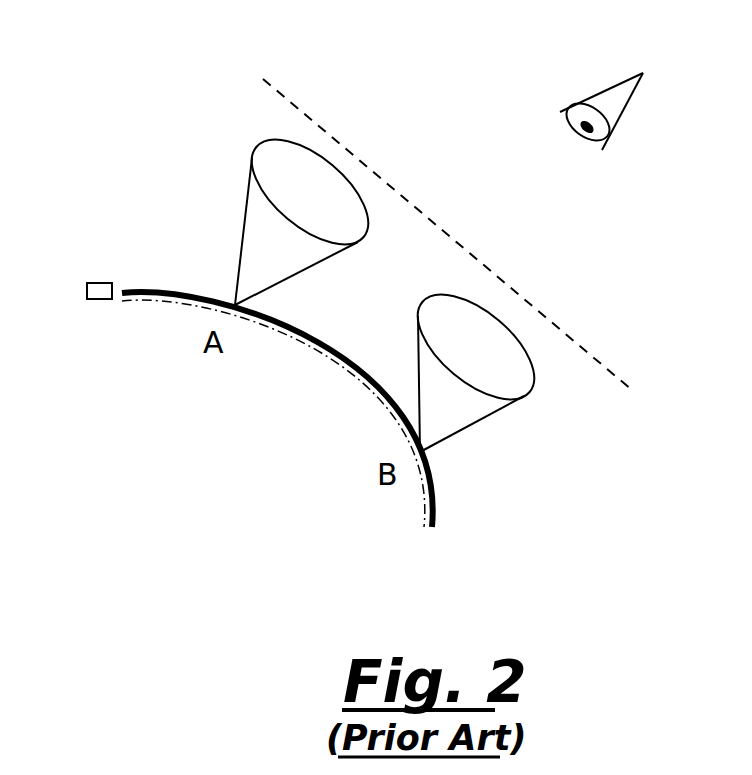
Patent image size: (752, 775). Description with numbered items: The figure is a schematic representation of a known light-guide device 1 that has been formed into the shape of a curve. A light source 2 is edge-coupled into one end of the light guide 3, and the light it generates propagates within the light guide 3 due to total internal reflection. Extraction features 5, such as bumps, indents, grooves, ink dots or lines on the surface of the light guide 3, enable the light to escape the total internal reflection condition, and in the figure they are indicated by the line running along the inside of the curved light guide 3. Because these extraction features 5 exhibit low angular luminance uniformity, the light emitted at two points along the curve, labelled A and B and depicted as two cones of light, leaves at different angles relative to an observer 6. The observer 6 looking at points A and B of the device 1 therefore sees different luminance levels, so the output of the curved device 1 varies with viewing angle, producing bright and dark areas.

The light-guide device 1 is at (143, 212).
The light source 2 is at (100, 283).
The light guide 3 is at (434, 502).
The extraction features 5 is at (275, 333).
The observer 6 is at (605, 137).